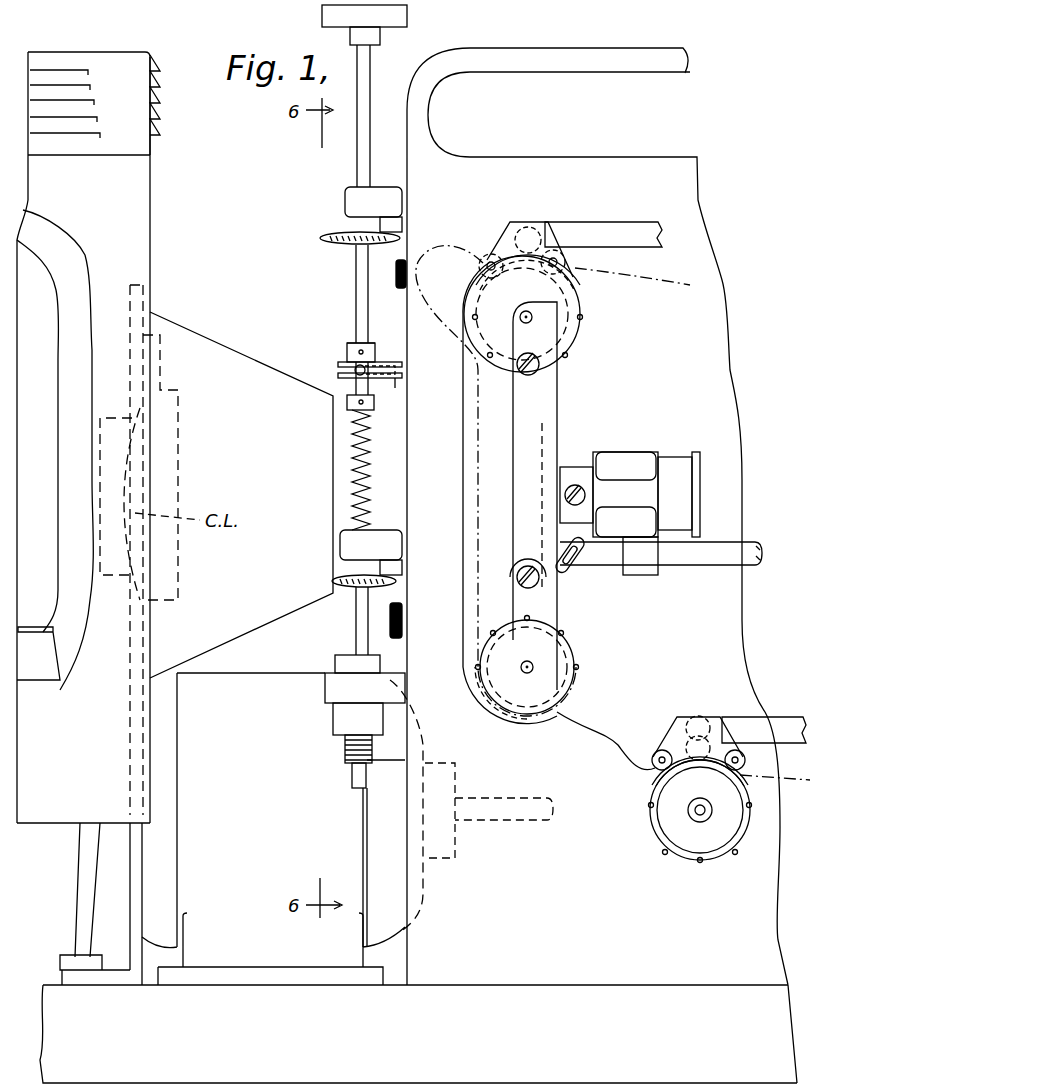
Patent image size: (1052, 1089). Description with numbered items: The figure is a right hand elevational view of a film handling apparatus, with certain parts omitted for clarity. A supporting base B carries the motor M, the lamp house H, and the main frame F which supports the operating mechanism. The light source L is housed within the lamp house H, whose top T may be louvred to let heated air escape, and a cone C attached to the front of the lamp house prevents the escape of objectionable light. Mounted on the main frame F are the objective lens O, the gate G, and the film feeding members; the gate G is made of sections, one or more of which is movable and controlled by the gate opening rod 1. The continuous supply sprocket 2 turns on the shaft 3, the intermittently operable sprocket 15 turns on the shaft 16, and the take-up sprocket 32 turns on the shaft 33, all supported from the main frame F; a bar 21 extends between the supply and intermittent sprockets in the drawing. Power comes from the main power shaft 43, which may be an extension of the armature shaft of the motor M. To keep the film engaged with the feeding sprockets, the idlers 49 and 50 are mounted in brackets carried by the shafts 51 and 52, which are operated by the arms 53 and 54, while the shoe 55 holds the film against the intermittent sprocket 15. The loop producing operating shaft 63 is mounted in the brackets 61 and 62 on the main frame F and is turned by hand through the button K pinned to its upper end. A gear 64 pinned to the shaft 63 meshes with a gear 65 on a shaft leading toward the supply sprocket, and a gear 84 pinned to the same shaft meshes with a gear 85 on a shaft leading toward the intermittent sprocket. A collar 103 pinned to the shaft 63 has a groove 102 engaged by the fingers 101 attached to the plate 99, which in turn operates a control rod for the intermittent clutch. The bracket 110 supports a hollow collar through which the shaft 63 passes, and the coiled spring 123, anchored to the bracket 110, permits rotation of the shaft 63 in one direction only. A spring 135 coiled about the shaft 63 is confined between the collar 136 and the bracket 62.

The gate opening rod 1 is at (696, 553).
The continuous supply sprocket 2 is at (580, 315).
The shaft 3 is at (532, 318).
The intermittently operable sprocket 15 is at (578, 658).
The shaft 16 is at (533, 667).
The slide bar 21 is at (545, 432).
The take-up sprocket 32 is at (683, 862).
The shaft 33 is at (696, 812).
The main power shaft 43 is at (505, 812).
The idler 49 is at (560, 262).
The idler 50 is at (740, 768).
The shaft 51 is at (530, 222).
The shaft 52 is at (700, 717).
The arm 53 is at (626, 222).
The arm 54 is at (790, 717).
The shoe 55 is at (470, 668).
The bracket 61 is at (345, 197).
The bracket 62 is at (382, 535).
The loop producing operating shaft 63 is at (372, 80).
The gear 64 is at (320, 240).
The gear 65 is at (400, 286).
The gear 84 is at (396, 581).
The gear 85 is at (402, 610).
The plate 99 is at (391, 390).
The fingers 101 is at (350, 350).
The groove 102 is at (340, 367).
The collar 103 is at (348, 343).
The bracket 110 is at (402, 690).
The coiled spring 123 is at (345, 755).
The spring 135 is at (352, 430).
The collar 136 is at (347, 402).
The button K is at (407, 18).
The top T is at (94, 103).
The light source L is at (55, 437).
The lamp house H is at (97, 521).
The supporting base B is at (418, 1034).
The main frame F is at (597, 516).
The cone C is at (241, 495).
The motor M is at (282, 829).
The gate G is at (465, 430).
The objective lens O is at (672, 470).